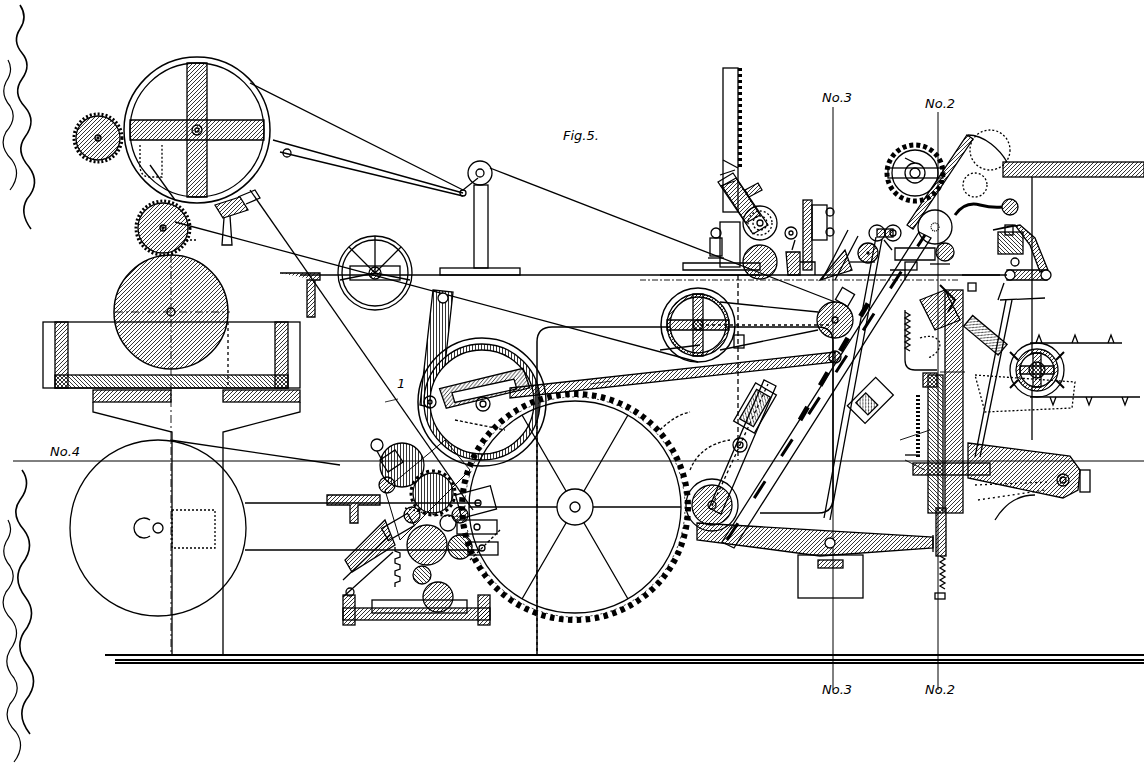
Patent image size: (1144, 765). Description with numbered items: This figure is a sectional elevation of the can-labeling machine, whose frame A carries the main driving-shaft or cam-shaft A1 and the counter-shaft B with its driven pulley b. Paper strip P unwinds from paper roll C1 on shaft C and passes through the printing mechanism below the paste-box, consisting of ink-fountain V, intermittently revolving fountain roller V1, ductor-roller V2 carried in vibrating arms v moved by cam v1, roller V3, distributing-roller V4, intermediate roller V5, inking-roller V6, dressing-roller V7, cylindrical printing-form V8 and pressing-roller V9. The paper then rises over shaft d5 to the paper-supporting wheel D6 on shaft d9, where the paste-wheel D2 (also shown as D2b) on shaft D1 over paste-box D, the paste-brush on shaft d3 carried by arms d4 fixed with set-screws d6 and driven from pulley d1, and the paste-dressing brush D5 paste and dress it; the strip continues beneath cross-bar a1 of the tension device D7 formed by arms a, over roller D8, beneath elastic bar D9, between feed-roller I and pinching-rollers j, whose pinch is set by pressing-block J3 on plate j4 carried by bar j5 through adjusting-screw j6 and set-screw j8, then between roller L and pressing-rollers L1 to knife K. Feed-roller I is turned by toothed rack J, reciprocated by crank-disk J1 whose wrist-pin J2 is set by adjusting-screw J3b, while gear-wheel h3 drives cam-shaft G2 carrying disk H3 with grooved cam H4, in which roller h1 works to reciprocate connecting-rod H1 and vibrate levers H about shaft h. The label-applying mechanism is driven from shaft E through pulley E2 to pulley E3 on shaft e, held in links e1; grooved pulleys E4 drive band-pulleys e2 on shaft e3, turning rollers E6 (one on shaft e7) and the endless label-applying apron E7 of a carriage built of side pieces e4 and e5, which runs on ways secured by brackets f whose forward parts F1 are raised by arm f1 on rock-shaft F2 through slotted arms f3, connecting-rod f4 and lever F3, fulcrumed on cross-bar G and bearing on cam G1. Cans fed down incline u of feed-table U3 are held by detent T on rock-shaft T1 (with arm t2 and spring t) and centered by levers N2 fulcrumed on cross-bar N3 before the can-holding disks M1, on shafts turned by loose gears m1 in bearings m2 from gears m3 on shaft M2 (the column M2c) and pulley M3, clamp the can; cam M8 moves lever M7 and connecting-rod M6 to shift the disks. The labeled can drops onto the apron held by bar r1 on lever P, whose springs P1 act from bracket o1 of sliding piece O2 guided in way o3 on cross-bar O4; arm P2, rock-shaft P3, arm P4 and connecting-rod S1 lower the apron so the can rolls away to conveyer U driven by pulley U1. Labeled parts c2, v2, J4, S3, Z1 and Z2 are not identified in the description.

The paper-supporting wheel D6 is at (150, 70).
The shaft of paper-supporting wheel d9 is at (203, 125).
The cam slot c2 is at (145, 170).
The paste-dressing brush D5 is at (98, 115).
The grooved pulley d1 is at (92, 155).
The paste-wheel D2 is at (138, 220).
The paste-brush shaft d3 is at (140, 236).
The arms d4 is at (190, 232).
The loosely-mounted shaft d5 is at (248, 208).
The set-screw d6 is at (238, 192).
The arms of paper-tension device a is at (355, 168).
The paper-tension device D7 is at (410, 185).
The cross-bar a1 is at (463, 197).
The roller D8 is at (494, 168).
The driven pulley b is at (390, 243).
The counter-shaft B is at (382, 270).
The paste-wheel D2b is at (125, 283).
The paste-wheel shaft D1 is at (165, 312).
The paste-box D is at (80, 382).
The paper roll C1 is at (275, 528).
The paper-roll shaft C is at (150, 528).
The connecting-rod H1 is at (436, 350).
The circular disk H3 is at (482, 402).
The feed-roller I is at (484, 383).
The grooved cam H4 is at (468, 403).
The cam-shaft G2 is at (520, 398).
The roller h1 is at (424, 402).
The shaft h is at (510, 422).
The main driving-shaft A1 is at (665, 560).
The ink-fountain V is at (416, 610).
The pressing-roller V9 is at (372, 449).
The cam v1 is at (382, 478).
The intermediate roller V5 is at (498, 528).
The inking-roller V6 is at (495, 497).
The distributing-roller V4 is at (497, 555).
The cylindrical printing-form V8 is at (355, 527).
The ink-surface dressing-roller V7 is at (390, 525).
The roller V3 is at (375, 550).
The roller v2 is at (360, 560).
The ductor-roller V2 is at (432, 565).
The fountain roller V1 is at (450, 592).
The vibrating arms v is at (371, 566).
The toothed rack J is at (740, 102).
The pressing-block J3 is at (755, 205).
The pinching-rollers j is at (775, 215).
The set-screw j8 is at (758, 182).
The adjusting-screw j6 is at (725, 166).
The horizontal bar j5 is at (722, 176).
The vertically-moving plate j4 is at (722, 188).
The bracket J4 is at (720, 225).
The elastic horizontal bar D9 is at (710, 250).
The pressing-rollers L1 is at (792, 244).
The knife K is at (817, 228).
The driving-shaft of label-applying mechanism E is at (670, 325).
The pulley E2 is at (669, 344).
The shaft e is at (853, 321).
The grooved pulleys E4 is at (769, 305).
The pulley E3 is at (769, 340).
The links e1 is at (765, 322).
The supporting-roller L is at (756, 367).
The levers H is at (844, 296).
The levers N2 is at (826, 390).
The springs P1 is at (855, 378).
The spring t is at (844, 360).
The cross-bar N3 is at (870, 400).
The arm of detent rock-shaft t2 is at (922, 380).
The cam G1 is at (735, 470).
The adjustable wrist-pin J2 is at (748, 446).
The adjusting-screw J3b is at (770, 420).
The crank-disk J1 is at (710, 455).
The gear-wheel h3 is at (675, 420).
The cam M8 is at (712, 531).
The cross-bar G is at (832, 540).
The lever M7 is at (905, 552).
The lever F3 is at (934, 530).
The shaft M2c is at (944, 395).
The cross-bar O4 is at (902, 457).
The way o3 is at (905, 439).
The pulley M3 is at (950, 373).
The connecting-rod M6 is at (909, 474).
The arm P2 is at (1040, 455).
The rock-shaft P3 is at (1090, 483).
The arm P4 is at (1038, 485).
The incline way u is at (1033, 162).
The feed-table U3 is at (1056, 156).
The pulley U1 is at (1054, 358).
The conveyer U is at (1085, 371).
The shaft M2 is at (930, 158).
The bearings m2 is at (915, 167).
The gears m3 is at (897, 155).
The can-holding disks M1 is at (938, 217).
The rock-shaft T1 is at (1020, 207).
The detent T is at (978, 200).
The slotted arms f3 is at (1032, 252).
The rock-shaft F2 is at (1052, 275).
The connecting-rod f4 is at (1032, 301).
The arm f1 is at (1014, 291).
The brackets f is at (1032, 258).
The bar r1 is at (979, 285).
The lever P is at (937, 325).
The block S3 is at (985, 332).
The connecting-rod S1 is at (993, 378).
The vertical sliding piece O2 is at (1025, 393).
The bracket o1 is at (927, 349).
The band-pulleys e2 is at (858, 252).
The shaft e3 is at (859, 242).
The roller Z1 is at (887, 223).
The roller Z2 is at (904, 226).
The loose gears m1 is at (915, 225).
The label-applying apron E7 is at (890, 228).
The rollers E6 is at (955, 251).
The shaft e7 is at (953, 262).
The carriage side pieces e4 is at (928, 267).
The carriage side pieces e5 is at (912, 278).
The forward ways F1 is at (905, 246).
The frame A is at (1134, 453).